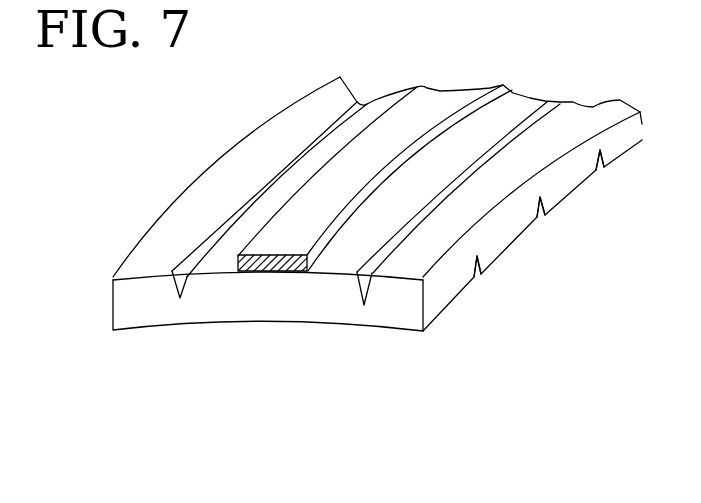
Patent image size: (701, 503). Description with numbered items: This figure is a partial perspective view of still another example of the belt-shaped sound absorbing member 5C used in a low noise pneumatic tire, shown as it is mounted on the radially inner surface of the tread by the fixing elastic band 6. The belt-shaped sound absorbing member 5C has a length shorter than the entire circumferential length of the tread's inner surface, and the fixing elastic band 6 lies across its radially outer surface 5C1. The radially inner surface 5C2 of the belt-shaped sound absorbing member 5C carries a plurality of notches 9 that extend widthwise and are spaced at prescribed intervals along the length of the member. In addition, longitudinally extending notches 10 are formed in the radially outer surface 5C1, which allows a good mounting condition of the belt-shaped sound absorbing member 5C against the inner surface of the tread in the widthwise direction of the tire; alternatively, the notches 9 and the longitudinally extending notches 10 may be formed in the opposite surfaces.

The belt-shaped sound absorbing member 5C is at (201, 167).
The radially outer surface 5C1 is at (158, 248).
The radially inner surface 5C2 is at (258, 323).
The fixing elastic band 6 is at (318, 193).
The notches 9 is at (540, 216).
The longitudinally extending notches 10 is at (537, 113).